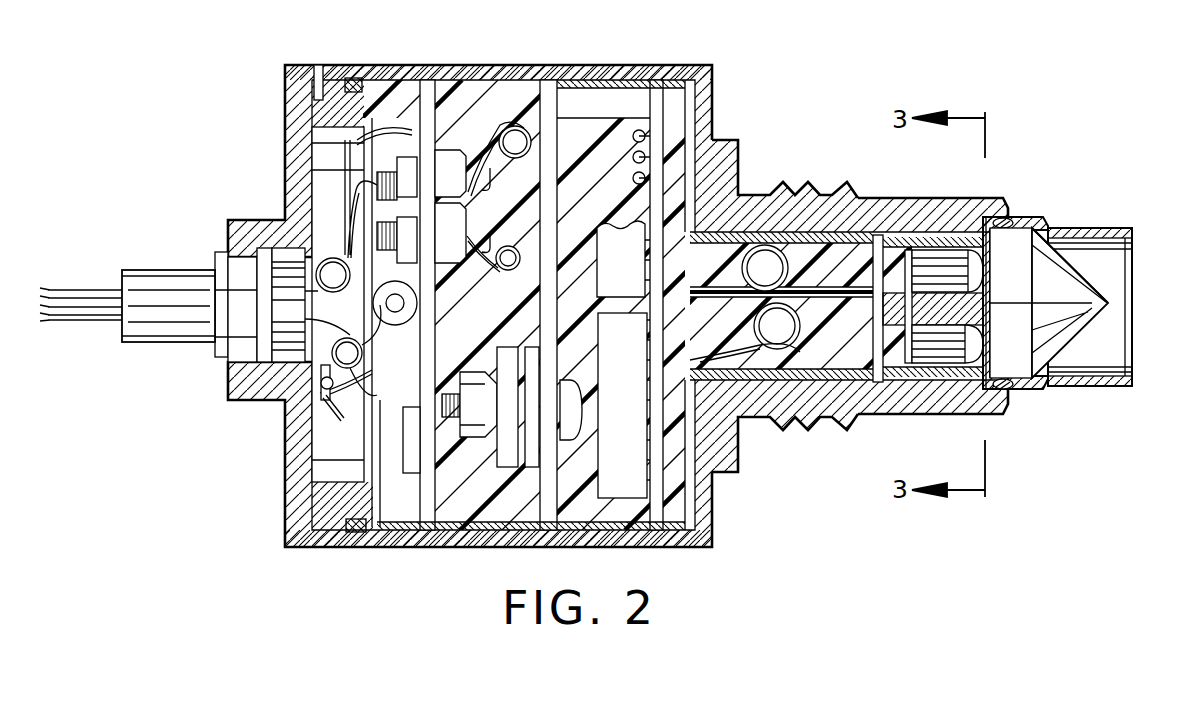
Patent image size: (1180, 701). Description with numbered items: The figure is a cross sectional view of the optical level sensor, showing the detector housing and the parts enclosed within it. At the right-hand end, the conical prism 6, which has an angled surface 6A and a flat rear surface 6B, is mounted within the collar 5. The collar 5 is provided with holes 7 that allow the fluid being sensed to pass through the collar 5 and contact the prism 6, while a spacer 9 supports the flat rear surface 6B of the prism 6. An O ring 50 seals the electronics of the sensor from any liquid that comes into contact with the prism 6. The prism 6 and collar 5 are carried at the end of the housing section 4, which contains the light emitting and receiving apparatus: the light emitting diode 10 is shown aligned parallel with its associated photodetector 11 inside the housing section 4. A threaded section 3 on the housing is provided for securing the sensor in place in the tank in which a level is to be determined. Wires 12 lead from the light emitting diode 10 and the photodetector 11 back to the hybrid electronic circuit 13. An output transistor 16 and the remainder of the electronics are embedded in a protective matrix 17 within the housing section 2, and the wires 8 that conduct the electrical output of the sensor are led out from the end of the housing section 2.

The housing section 2 is at (395, 64).
The threaded section 3 is at (818, 185).
The housing section 4 is at (877, 414).
The collar 5 is at (1090, 288).
The conical prism 6 is at (1083, 303).
The angled surface 6A is at (1082, 270).
The flat rear surface 6B is at (1020, 392).
The holes 7 is at (1072, 230).
The wires 8 is at (95, 290).
The spacer 9 is at (990, 395).
The light emitting diode 10 is at (930, 352).
The photodetector 11 is at (940, 265).
The wires 12 is at (760, 255).
The hybrid electronic circuit 13 is at (625, 465).
The output transistor 16 is at (500, 452).
The protective matrix 17 is at (588, 133).
The O ring 50 is at (1005, 217).